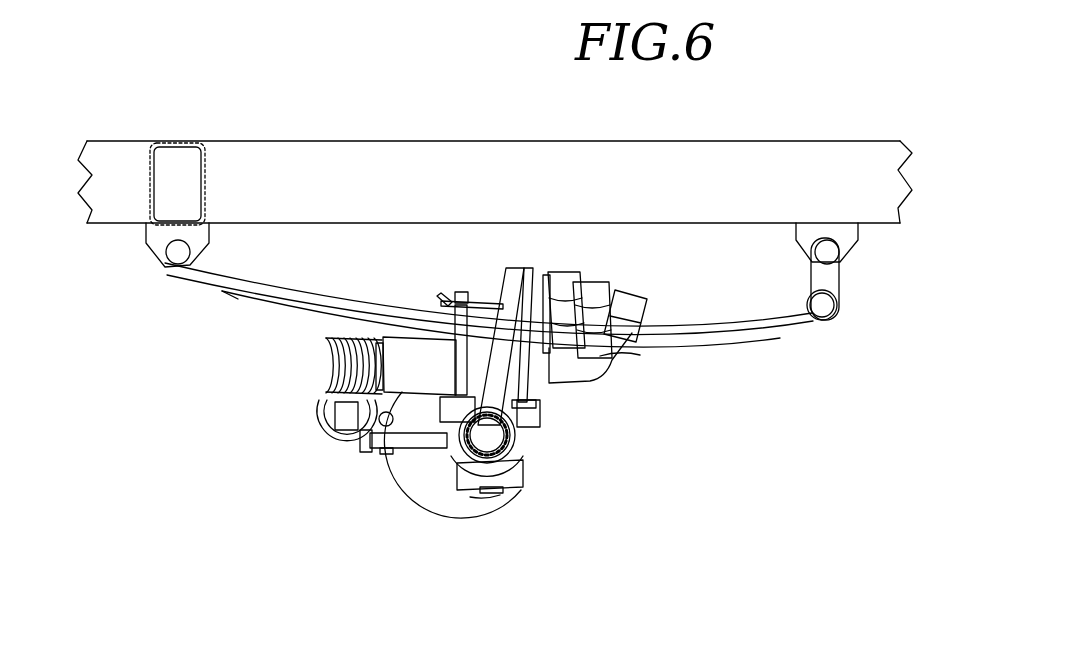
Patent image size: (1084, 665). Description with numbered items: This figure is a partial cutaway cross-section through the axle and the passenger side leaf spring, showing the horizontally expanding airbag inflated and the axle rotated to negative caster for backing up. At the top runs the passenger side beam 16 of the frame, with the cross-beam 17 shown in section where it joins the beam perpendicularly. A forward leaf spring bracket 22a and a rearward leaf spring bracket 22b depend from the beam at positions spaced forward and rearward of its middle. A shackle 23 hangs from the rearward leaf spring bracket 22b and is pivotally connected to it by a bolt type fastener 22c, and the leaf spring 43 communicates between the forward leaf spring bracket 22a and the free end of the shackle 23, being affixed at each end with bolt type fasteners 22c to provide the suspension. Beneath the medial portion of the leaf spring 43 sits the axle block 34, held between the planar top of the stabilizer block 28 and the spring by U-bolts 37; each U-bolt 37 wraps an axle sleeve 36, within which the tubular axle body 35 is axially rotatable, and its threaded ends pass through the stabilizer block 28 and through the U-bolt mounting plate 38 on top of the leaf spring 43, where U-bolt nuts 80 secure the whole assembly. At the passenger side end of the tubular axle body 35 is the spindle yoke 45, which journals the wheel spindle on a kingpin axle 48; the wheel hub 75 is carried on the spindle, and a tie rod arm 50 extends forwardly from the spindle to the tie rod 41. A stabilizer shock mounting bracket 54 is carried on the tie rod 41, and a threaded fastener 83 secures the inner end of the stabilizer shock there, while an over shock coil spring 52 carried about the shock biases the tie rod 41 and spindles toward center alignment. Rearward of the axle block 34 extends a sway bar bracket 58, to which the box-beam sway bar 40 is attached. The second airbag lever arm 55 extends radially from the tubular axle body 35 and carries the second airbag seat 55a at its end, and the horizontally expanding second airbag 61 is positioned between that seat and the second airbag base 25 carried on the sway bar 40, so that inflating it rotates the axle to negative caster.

The passenger side beam 16 is at (415, 163).
The cross-beam 17 is at (187, 142).
The forward leaf spring bracket 22a is at (195, 233).
The rearward leaf spring bracket 22b is at (808, 237).
The bolt type fastener 22c is at (177, 252).
The shackle 23 is at (825, 277).
The second airbag base 25 is at (617, 342).
The stabilizer block 28 is at (535, 408).
The axle block 34 is at (403, 353).
The tubular axle body 35 is at (473, 463).
The axle sleeve 36 is at (430, 440).
The U-bolt 37 is at (457, 363).
The U-bolt mounting plate 38 is at (483, 306).
The sway bar 40 is at (618, 296).
The tie rod 41 is at (385, 424).
The leaf spring 43 is at (292, 297).
The passenger side spindle yoke 45 is at (518, 477).
The kingpin axle 48 is at (503, 490).
The tie rod arm 50 is at (431, 483).
The over shock coil spring 52 is at (325, 362).
The stabilizer shock mounting bracket 54 is at (372, 436).
The second airbag lever arm 55 is at (510, 283).
The second airbag seat 55a is at (533, 268).
The sway bar bracket 58 is at (565, 368).
The second airbag 61 is at (590, 302).
The wheel hub 75 is at (483, 497).
The U-bolt nut 80 is at (447, 292).
The threaded fastener 83 is at (325, 415).